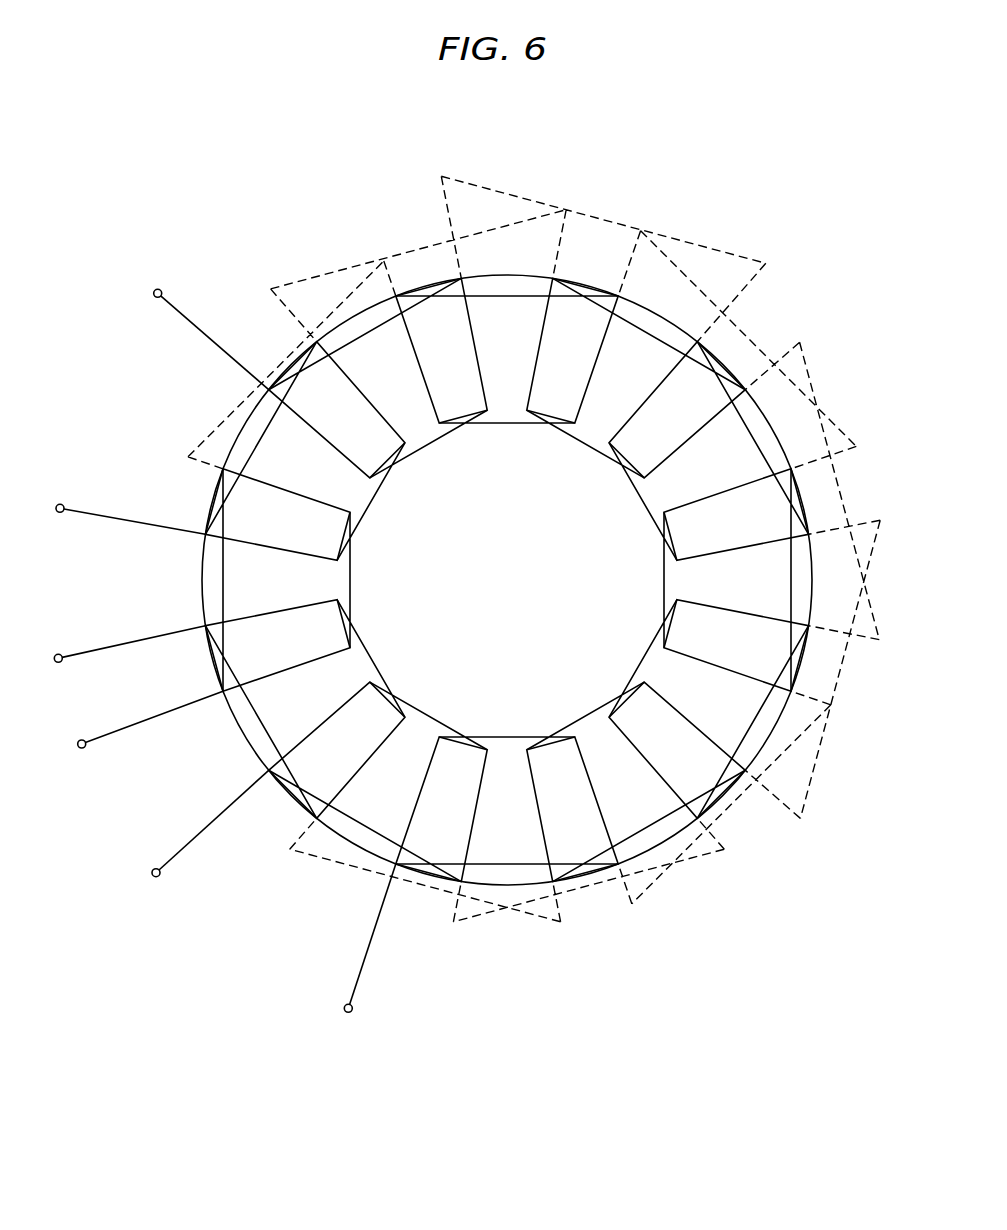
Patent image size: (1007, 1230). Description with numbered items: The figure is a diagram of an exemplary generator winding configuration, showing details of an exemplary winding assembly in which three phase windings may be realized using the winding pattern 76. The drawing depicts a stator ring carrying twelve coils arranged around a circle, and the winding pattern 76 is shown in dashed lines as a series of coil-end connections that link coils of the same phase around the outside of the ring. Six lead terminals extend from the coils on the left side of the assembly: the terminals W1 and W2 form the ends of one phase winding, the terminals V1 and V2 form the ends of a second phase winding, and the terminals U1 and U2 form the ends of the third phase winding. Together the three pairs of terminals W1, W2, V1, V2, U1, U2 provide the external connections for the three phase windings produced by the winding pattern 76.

The winding pattern 76 is at (617, 223).
The W-phase lead wire terminal 1 W1 is at (197, 326).
The V-phase lead wire terminal 1 V1 is at (116, 513).
The W-phase lead wire terminal 2 W2 is at (115, 649).
The U-phase lead wire terminal 1 U1 is at (135, 729).
The V-phase lead wire terminal 2 V2 is at (199, 840).
The U-phase lead wire terminal 2 U2 is at (366, 958).